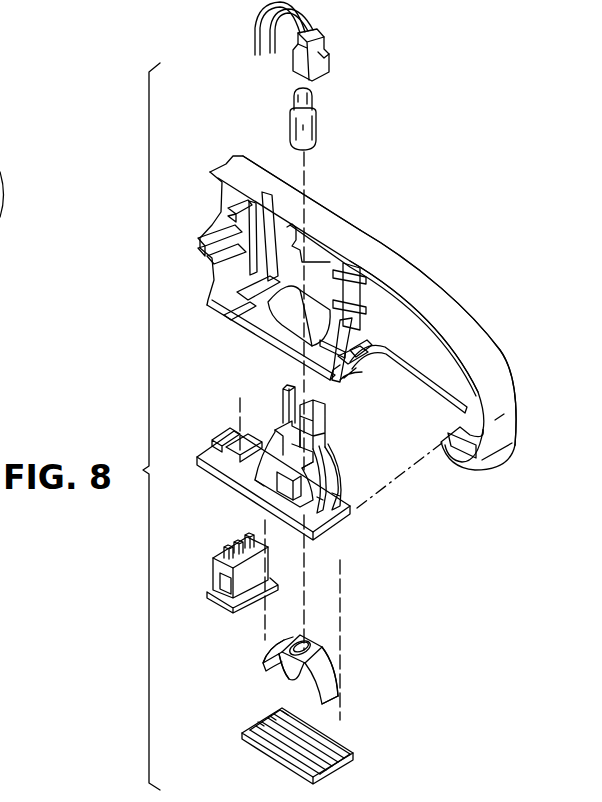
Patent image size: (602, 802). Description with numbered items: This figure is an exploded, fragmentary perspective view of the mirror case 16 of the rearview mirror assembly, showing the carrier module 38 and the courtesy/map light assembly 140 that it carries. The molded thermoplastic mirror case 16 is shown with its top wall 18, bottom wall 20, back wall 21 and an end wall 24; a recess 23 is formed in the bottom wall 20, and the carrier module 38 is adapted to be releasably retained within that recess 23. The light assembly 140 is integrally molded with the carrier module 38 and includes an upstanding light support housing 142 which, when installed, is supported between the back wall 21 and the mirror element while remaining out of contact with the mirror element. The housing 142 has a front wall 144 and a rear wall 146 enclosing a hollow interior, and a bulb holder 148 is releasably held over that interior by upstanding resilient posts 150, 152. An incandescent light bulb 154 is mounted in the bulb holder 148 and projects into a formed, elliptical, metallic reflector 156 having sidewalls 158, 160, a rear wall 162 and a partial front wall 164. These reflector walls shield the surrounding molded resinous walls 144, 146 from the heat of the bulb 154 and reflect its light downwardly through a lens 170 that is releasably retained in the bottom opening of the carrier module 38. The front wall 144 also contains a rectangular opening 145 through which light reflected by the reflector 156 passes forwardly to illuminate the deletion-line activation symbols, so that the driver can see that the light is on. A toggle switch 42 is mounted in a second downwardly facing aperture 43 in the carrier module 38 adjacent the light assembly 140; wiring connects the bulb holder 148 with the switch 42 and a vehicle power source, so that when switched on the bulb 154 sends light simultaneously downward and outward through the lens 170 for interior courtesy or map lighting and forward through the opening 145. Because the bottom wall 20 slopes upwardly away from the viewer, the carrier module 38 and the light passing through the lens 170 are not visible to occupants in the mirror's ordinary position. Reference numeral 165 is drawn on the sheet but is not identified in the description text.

The mirror case 16 is at (374, 241).
The top wall 18 is at (337, 226).
The bottom wall 20 is at (253, 327).
The back wall 21 is at (392, 333).
The recess 23 is at (413, 364).
The end wall 24 is at (493, 353).
The carrier module 38 is at (212, 479).
The toggle switch 42 is at (215, 605).
The second downwardly facing aperture 43 is at (213, 452).
The light assembly 140 is at (403, 533).
The light support housing 142 is at (275, 428).
The front wall 144 is at (315, 472).
The rectangular opening 145 is at (262, 485).
The rear wall 146 is at (338, 484).
The bulb holder 148 is at (294, 59).
The upstanding resilient post 150 is at (326, 409).
The upstanding resilient post 152 is at (283, 393).
The incandescent light bulb 154 is at (318, 133).
The reflector 156 is at (343, 678).
The sidewall 158 is at (332, 692).
The sidewall 160 is at (263, 665).
The rear wall 162 is at (332, 665).
The partial front wall 164 is at (280, 676).
The cap aperture 165 is at (301, 644).
The lens 170 is at (272, 753).